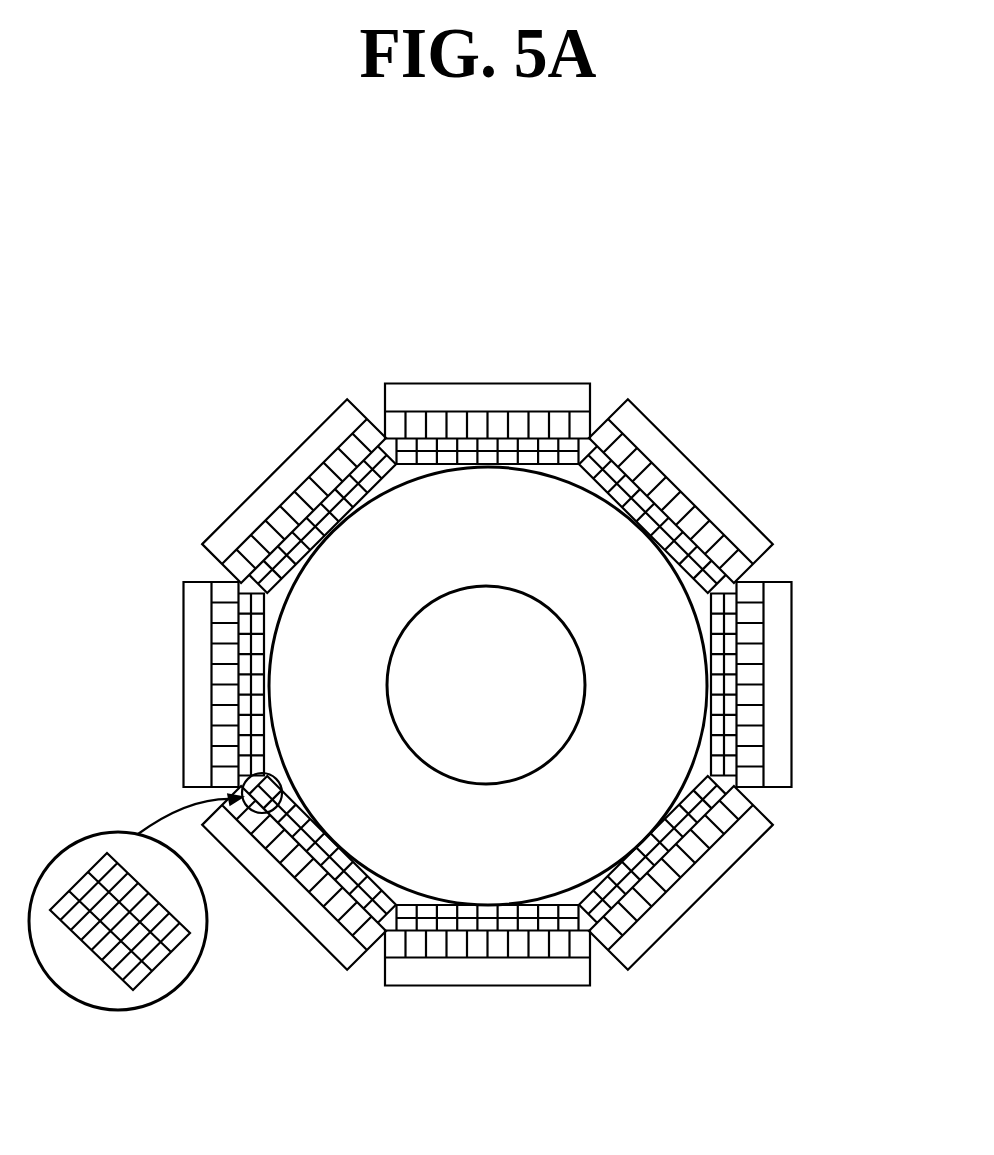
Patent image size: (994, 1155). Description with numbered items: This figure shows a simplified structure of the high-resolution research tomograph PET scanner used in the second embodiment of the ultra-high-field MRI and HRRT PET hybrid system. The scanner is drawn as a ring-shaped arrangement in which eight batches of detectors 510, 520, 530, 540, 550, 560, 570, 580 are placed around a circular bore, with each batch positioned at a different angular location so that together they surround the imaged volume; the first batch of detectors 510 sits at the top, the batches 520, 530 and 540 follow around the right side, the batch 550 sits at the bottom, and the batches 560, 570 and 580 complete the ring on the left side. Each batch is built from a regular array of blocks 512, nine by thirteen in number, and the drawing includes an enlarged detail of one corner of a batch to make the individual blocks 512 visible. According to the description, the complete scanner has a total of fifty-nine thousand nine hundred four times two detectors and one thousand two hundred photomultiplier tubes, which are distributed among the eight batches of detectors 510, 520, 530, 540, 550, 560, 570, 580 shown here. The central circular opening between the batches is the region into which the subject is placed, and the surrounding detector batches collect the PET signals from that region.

The batch of detectors 510 is at (502, 383).
The blocks 512 is at (80, 840).
The batch of detectors 520 is at (713, 480).
The batch of detectors 530 is at (793, 672).
The batch of detectors 540 is at (708, 892).
The batch of detectors 550 is at (480, 986).
The batch of detectors 560 is at (287, 918).
The batch of detectors 570 is at (182, 680).
The batch of detectors 580 is at (270, 478).